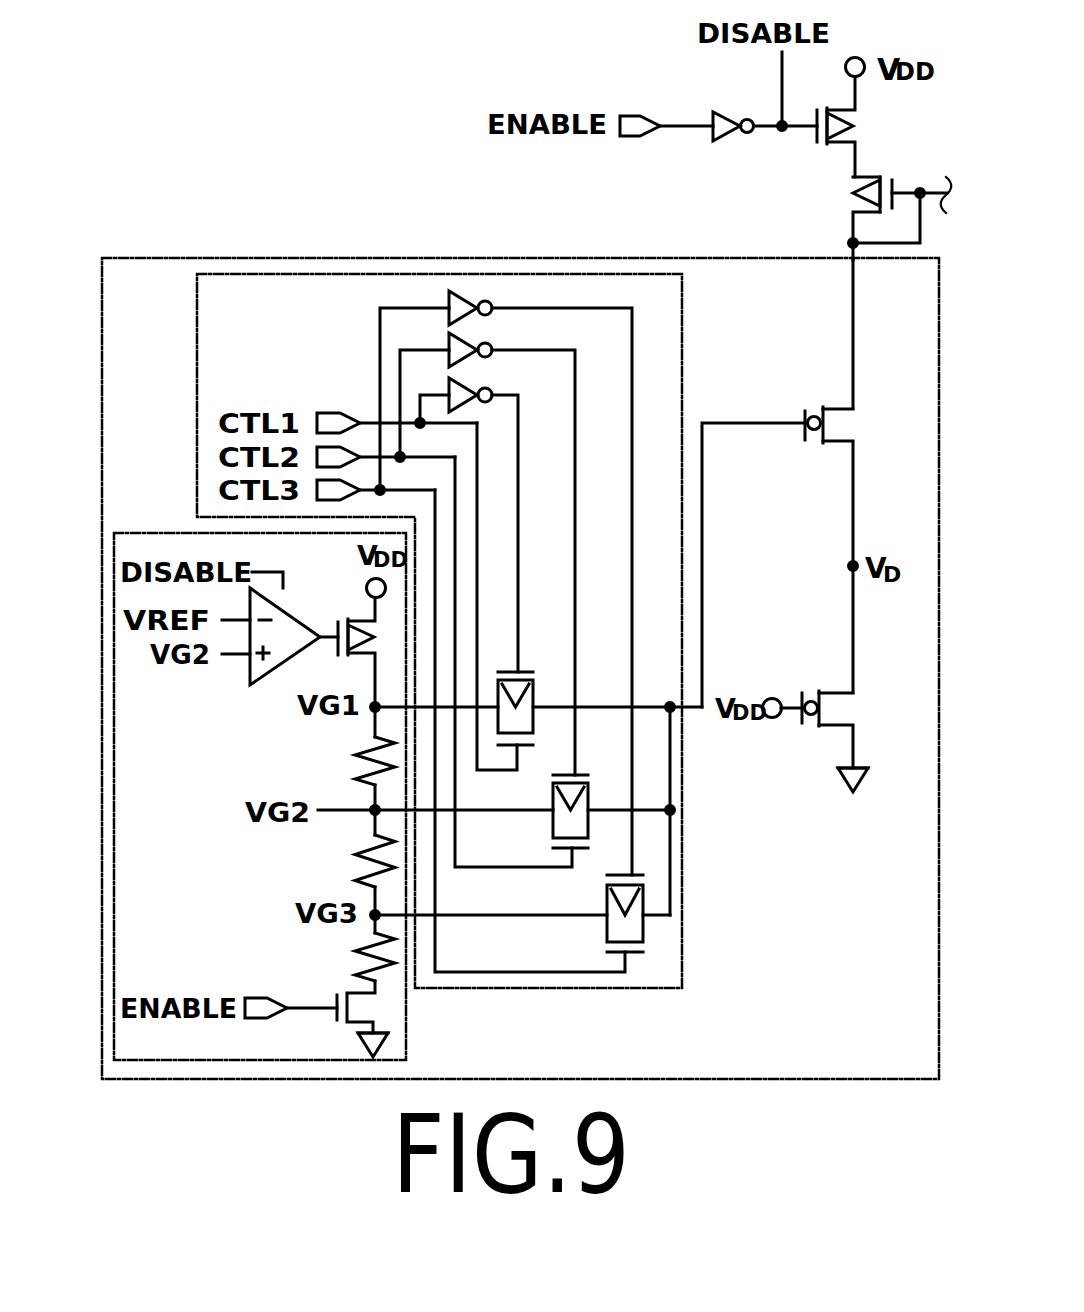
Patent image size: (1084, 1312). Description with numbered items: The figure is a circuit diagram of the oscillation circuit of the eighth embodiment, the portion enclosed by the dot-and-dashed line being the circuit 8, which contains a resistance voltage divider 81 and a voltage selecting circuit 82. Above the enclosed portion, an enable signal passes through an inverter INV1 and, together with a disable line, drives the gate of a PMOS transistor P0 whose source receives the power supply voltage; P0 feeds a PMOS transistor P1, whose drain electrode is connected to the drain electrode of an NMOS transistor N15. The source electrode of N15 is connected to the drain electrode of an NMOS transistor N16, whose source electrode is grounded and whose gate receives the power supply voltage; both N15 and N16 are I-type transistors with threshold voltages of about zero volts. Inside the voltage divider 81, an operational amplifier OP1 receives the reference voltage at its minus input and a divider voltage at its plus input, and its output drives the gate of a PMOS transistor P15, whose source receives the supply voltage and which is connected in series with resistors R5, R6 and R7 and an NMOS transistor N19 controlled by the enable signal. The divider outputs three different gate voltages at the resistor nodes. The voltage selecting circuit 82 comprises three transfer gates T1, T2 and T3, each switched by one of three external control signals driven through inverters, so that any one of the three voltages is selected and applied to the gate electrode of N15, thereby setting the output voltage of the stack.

The oscillation circuit 8 is at (272, 257).
The resistance voltage divider 81 is at (406, 1027).
The voltage selecting circuit 82 is at (683, 903).
The inverter INV1 is at (725, 112).
The PMOS transistor P0 is at (860, 128).
The PMOS transistor P1 is at (845, 194).
The PMOS transistor P15 is at (372, 617).
The NMOS transistor N15 is at (844, 426).
The NMOS transistor N16 is at (838, 710).
The NMOS transistor N19 is at (353, 1028).
The operational amplifier OP1 is at (252, 677).
The resistor R5 is at (354, 753).
The resistor R6 is at (354, 859).
The resistor R7 is at (354, 961).
The transfer gate T1 is at (528, 665).
The transfer gate T2 is at (550, 818).
The transfer gate T3 is at (602, 923).